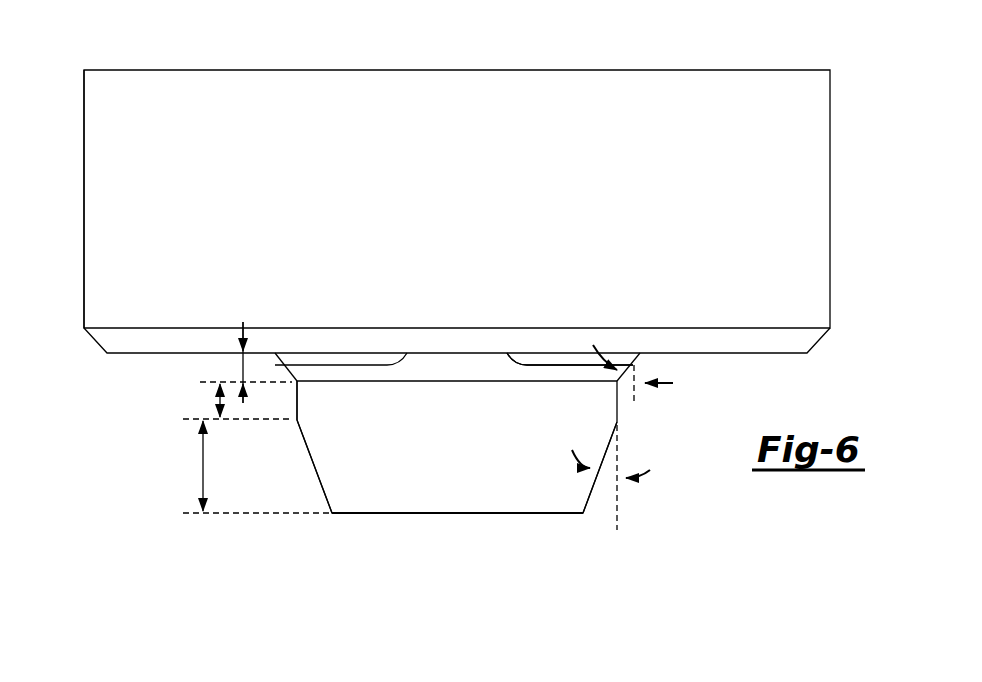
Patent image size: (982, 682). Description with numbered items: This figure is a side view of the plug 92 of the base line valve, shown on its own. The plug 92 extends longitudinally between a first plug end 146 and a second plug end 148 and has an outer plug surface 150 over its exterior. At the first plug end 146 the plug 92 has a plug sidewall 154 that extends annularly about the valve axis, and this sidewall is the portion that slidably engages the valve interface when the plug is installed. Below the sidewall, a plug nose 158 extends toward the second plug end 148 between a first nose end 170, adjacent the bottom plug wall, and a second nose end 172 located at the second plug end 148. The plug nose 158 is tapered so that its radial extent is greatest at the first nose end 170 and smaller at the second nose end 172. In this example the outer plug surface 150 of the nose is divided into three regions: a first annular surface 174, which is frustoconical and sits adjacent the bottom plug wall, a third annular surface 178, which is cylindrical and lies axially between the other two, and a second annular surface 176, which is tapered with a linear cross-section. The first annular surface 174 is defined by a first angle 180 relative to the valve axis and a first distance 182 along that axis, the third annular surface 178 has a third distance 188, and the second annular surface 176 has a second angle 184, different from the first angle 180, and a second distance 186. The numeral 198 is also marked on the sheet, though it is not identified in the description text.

The plug 92 is at (126, 32).
The first plug end 146 is at (793, 70).
The second plug end 148 is at (430, 513).
The outer plug surface 150 is at (367, 490).
The plug sidewall 154 is at (107, 107).
The plug nose 158 is at (541, 522).
The first nose end 170 is at (632, 376).
The second nose end 172 is at (500, 513).
The first annular surface 174 is at (287, 377).
The second annular surface 176 is at (322, 490).
The third annular surface 178 is at (297, 385).
The first angle 180 is at (635, 353).
The first distance 182 is at (241, 378).
The second angle 184 is at (606, 478).
The second distance 186 is at (201, 460).
The third distance 188 is at (218, 400).
The upper panel 198 is at (340, 0).